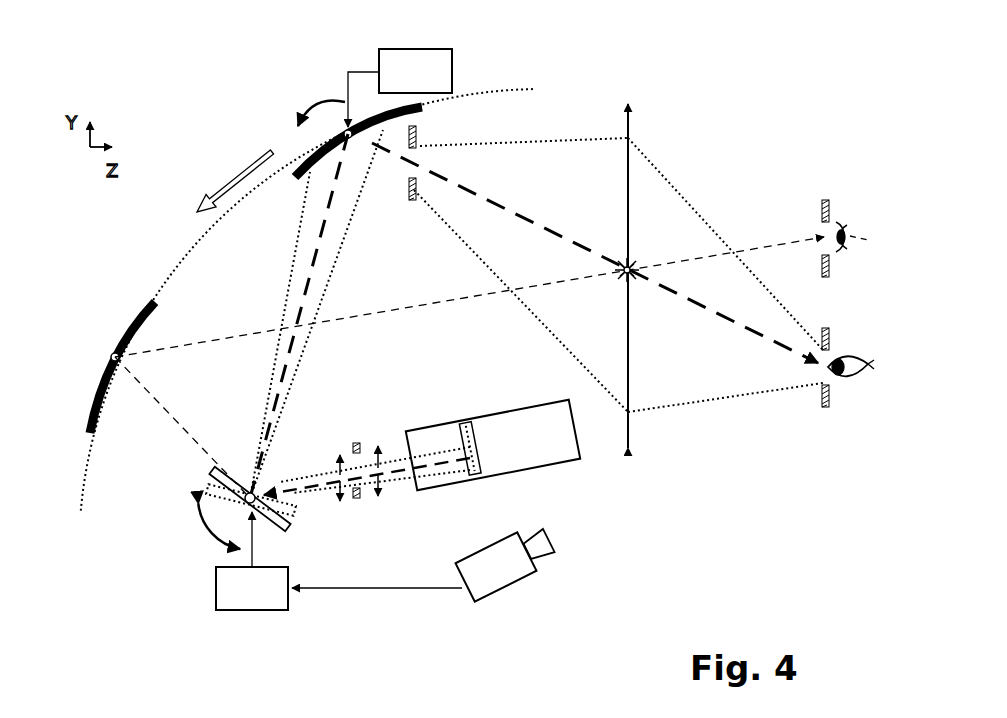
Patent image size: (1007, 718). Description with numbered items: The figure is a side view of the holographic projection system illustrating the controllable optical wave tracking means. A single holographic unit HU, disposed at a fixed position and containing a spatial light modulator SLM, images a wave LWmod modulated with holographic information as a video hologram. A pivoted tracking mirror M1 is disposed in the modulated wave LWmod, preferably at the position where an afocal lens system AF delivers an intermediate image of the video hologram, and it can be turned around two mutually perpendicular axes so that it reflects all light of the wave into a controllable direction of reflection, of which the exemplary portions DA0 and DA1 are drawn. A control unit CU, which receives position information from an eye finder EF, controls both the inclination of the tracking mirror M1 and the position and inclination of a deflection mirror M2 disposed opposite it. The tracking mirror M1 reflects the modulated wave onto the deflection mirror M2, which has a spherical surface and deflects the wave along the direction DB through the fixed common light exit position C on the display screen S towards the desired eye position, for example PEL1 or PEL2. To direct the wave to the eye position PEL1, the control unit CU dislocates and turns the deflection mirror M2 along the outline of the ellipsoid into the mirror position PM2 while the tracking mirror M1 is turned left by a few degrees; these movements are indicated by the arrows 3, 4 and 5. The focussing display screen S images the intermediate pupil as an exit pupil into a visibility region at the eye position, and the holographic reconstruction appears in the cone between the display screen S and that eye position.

The arrow 3 is at (320, 103).
The arrow 4 is at (235, 181).
The arrow 5 is at (208, 536).
The tracking mirror M1 is at (222, 499).
The deflection mirror M2 is at (345, 156).
The mirror position PM2 is at (109, 363).
The control unit CU is at (339, 329).
The holographic unit HU is at (492, 444).
The spatial light modulator SLM is at (489, 444).
The eye finder camera EF is at (507, 561).
The afocal lens system AF is at (357, 457).
The modulated wave LWmod is at (318, 492).
The direction of reflection portion DA0 is at (282, 388).
The direction of reflection portion DA1 is at (168, 413).
The observer beam axis DB is at (595, 253).
The display screen S is at (638, 276).
The common light exit position C is at (629, 290).
The eye position PEL1 is at (815, 367).
The second eye position PEL2 is at (806, 238).